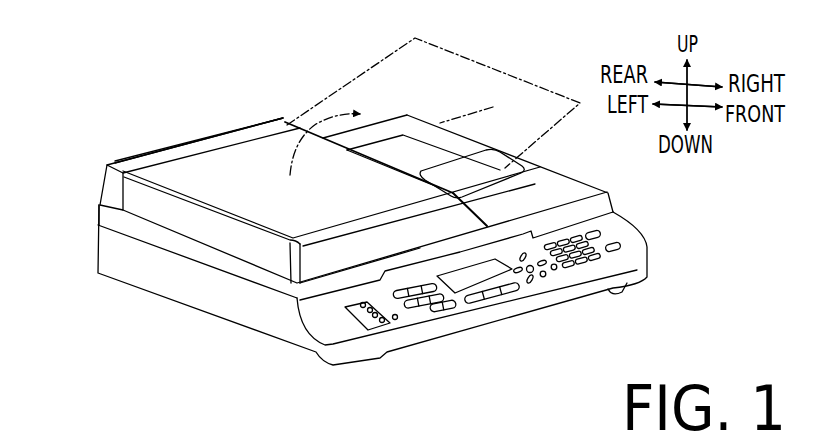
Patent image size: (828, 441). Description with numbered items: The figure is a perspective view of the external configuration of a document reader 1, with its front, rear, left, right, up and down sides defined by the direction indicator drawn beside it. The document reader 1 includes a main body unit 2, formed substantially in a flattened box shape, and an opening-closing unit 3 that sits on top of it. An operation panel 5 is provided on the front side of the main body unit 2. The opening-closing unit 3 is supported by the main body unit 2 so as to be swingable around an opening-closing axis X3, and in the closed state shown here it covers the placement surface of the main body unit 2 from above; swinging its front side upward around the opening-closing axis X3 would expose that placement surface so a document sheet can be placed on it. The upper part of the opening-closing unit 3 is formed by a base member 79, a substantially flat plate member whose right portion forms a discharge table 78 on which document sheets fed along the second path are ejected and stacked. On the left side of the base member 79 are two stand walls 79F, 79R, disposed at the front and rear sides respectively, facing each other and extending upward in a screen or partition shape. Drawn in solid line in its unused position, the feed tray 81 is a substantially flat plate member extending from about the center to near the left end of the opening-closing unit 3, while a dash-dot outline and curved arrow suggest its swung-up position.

The document reader 1 is at (351, 220).
The main body unit 2 is at (190, 295).
The opening-closing unit 3 is at (367, 230).
The operation panel 5 is at (535, 282).
The discharge table 78 is at (558, 165).
The base member 79 is at (572, 193).
The stand wall 79R is at (162, 155).
The stand wall 79F is at (360, 247).
The feed tray 81 is at (247, 150).
The opening-closing axis X3 is at (98, 225).